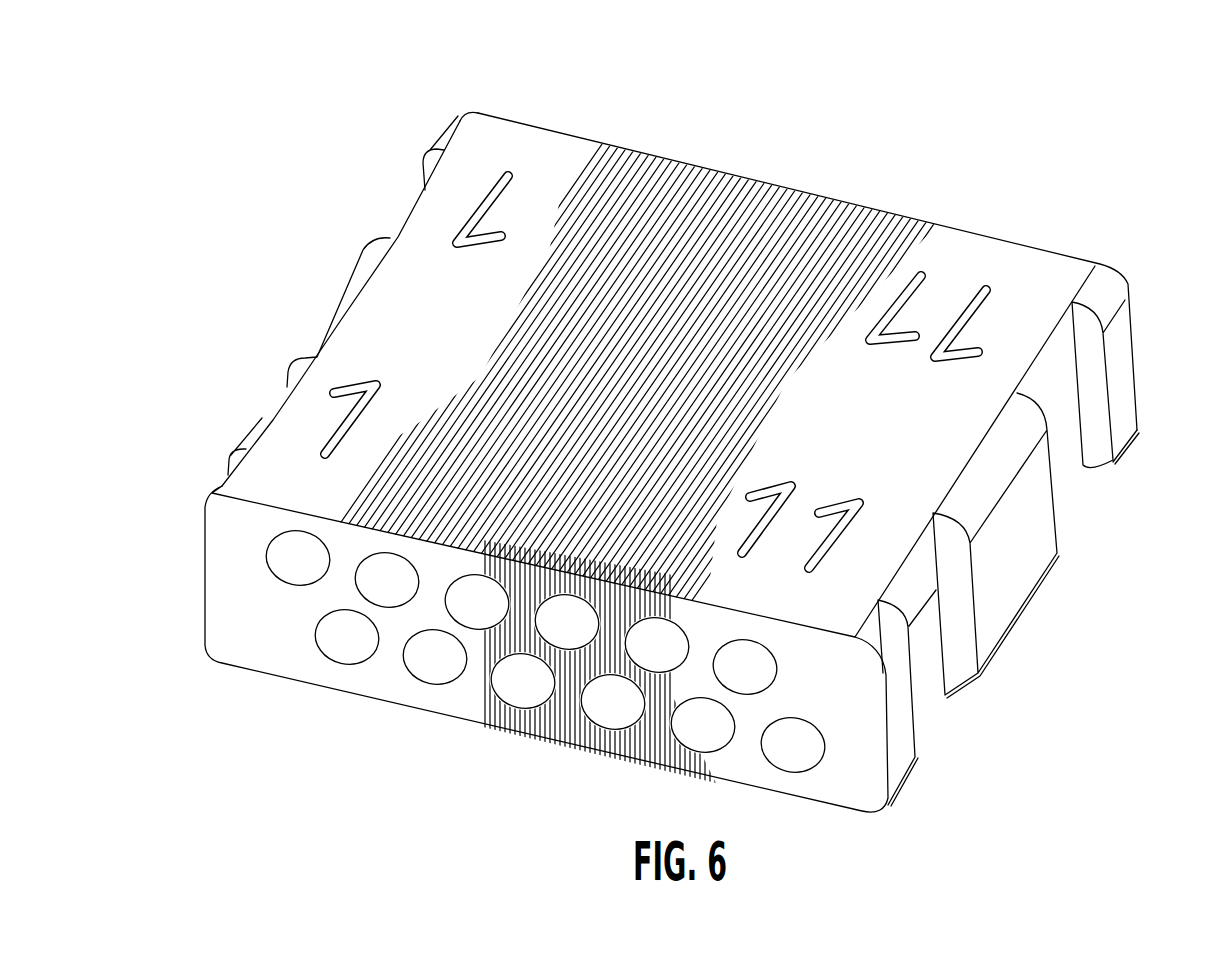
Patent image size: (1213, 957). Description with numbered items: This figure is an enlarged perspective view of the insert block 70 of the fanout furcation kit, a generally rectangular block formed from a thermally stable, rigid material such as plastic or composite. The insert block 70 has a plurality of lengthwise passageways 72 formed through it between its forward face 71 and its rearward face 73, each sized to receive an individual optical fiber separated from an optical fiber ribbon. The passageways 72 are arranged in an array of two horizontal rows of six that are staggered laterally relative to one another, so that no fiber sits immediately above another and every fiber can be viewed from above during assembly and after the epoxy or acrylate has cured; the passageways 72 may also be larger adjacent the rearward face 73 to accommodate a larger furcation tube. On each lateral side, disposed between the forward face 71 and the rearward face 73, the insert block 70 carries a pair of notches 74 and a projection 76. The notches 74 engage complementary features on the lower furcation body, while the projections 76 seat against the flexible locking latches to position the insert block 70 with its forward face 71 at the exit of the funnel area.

The insert block 70 is at (784, 189).
The forward face 71 is at (238, 600).
The passageways 72 is at (573, 632).
The rearward face 73 is at (528, 126).
The notches 74 is at (410, 217).
The projection 76 is at (322, 317).